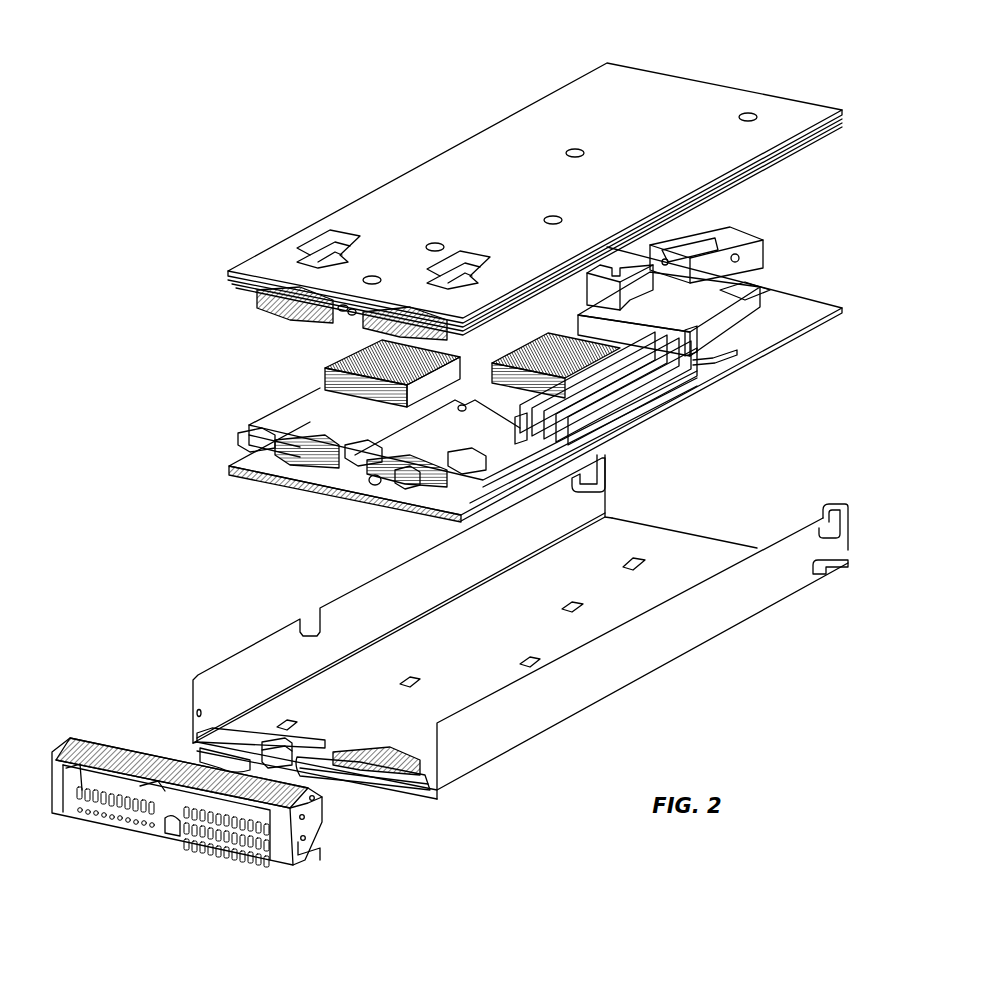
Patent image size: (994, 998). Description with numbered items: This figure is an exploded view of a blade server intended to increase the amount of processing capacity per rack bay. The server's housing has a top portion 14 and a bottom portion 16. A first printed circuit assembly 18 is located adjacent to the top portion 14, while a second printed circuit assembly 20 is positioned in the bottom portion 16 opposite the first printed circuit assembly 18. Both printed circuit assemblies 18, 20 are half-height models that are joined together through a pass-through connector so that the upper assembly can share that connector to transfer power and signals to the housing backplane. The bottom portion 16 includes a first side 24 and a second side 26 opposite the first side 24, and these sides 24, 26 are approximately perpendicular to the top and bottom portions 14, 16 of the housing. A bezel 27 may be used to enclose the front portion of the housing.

The top portion 14 is at (648, 85).
The first printed circuit assembly 18 is at (795, 148).
The second printed circuit assembly 20 is at (805, 310).
The bottom portion 16 is at (520, 627).
The first side 24 is at (385, 609).
The second side 26 is at (646, 652).
The bezel 27 is at (125, 825).